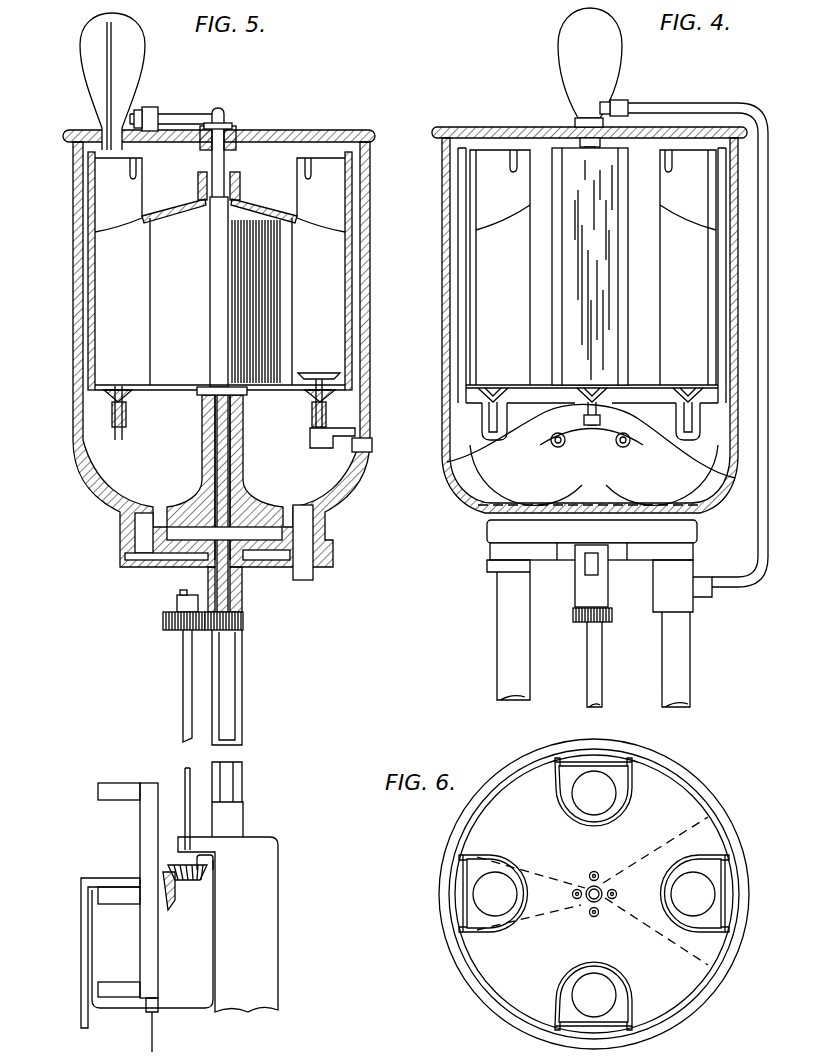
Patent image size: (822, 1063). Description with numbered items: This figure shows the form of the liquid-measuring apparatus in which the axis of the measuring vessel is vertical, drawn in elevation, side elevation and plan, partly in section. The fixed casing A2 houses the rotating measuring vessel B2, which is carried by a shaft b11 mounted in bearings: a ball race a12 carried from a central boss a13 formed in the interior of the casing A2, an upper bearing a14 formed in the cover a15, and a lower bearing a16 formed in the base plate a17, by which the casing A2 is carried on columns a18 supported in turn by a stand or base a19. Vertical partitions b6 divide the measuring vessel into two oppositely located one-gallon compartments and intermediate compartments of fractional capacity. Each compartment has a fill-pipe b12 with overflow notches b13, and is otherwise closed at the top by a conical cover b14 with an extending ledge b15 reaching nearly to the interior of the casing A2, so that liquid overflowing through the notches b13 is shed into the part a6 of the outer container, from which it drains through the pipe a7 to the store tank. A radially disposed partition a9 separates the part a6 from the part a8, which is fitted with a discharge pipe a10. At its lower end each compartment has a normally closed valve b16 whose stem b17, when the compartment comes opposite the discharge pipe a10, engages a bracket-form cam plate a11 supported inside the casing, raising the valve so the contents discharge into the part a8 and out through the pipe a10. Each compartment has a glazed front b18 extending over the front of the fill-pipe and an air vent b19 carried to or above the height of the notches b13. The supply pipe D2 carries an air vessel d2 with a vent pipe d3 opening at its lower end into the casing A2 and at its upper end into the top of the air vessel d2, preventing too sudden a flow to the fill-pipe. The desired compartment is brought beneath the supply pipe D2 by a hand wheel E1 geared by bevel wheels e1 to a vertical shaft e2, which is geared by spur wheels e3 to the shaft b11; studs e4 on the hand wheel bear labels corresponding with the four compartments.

In FIG. 4, the air vessel d2 is at (572, 38).
In FIG. 5, the air vessel d2 is at (83, 40).
In FIG. 5, the vent pipe d3 is at (108, 88).
In FIG. 4, the supply pipe D2 is at (667, 106).
In FIG. 5, the supply pipe D2 is at (164, 117).
In FIG. 4, the shaft b11 is at (590, 656).
In FIG. 5, the shaft b11 is at (216, 125).
In FIG. 6, the shaft b11 is at (588, 885).
In FIG. 4, the bearing a14 is at (588, 117).
In FIG. 5, the bearing a14 is at (226, 128).
In FIG. 4, the cover a15 is at (550, 127).
In FIG. 5, the cover a15 is at (306, 128).
In FIG. 4, the fixed casing A2 is at (447, 347).
In FIG. 5, the fixed casing A2 is at (78, 348).
In FIG. 6, the fixed casing A2 is at (520, 765).
In FIG. 4, the rotating measuring vessel B2 is at (490, 272).
In FIG. 5, the rotating measuring vessel B2 is at (268, 222).
In FIG. 6, the rotating measuring vessel B2 is at (672, 798).
In FIG. 4, the fill-pipe b12 is at (697, 205).
In FIG. 5, the fill-pipe b12 is at (108, 190).
In FIG. 6, the fill-pipe b12 is at (553, 797).
In FIG. 4, the overflow notches b13 is at (511, 163).
In FIG. 5, the overflow notches b13 is at (137, 170).
In FIG. 4, the conical cover b14 is at (530, 207).
In FIG. 5, the conical cover b14 is at (186, 216).
In FIG. 5, the extending ledge b15 is at (95, 229).
In FIG. 4, the glazed front b18 is at (610, 322).
In FIG. 5, the glazed front b18 is at (92, 248).
In FIG. 6, the glazed front b18 is at (598, 763).
In FIG. 5, the air vent b19 is at (200, 186).
In FIG. 6, the air vent b19 is at (597, 874).
In FIG. 5, the vertical partitions b6 is at (283, 273).
In FIG. 6, the vertical partitions b6 is at (537, 870).
In FIG. 5, the valve b16 is at (118, 383).
In FIG. 6, the valve b16 is at (606, 805).
In FIG. 4, the valve stem b17 is at (586, 424).
In FIG. 5, the valve stem b17 is at (121, 432).
In FIG. 4, the cam plate a11 is at (590, 432).
In FIG. 5, the cam plate a11 is at (325, 434).
In FIG. 5, the ball race a12 is at (244, 392).
In FIG. 4, the central boss a13 is at (612, 403).
In FIG. 5, the central boss a13 is at (206, 405).
In FIG. 5, the overflow part of container a6 is at (115, 487).
In FIG. 5, the drain pipe a7 is at (143, 552).
In FIG. 5, the discharge part of container a8 is at (314, 486).
In FIG. 4, the radially disposed partition a9 is at (465, 437).
In FIG. 4, the discharge pipe a10 is at (600, 562).
In FIG. 5, the discharge pipe a10 is at (302, 572).
In FIG. 4, the lower bearing a16 is at (582, 594).
In FIG. 4, the base plate a17 is at (505, 538).
In FIG. 5, the base plate a17 is at (330, 541).
In FIG. 4, the columns a18 is at (505, 634).
In FIG. 5, the columns a18 is at (243, 709).
In FIG. 5, the stand or base a19 is at (262, 947).
In FIG. 5, the bevel wheels e1 is at (203, 868).
In FIG. 5, the vertical shaft e2 is at (183, 740).
In FIG. 4, the spur wheels e3 is at (612, 620).
In FIG. 5, the spur wheels e3 is at (165, 623).
In FIG. 5, the studs e4 is at (108, 788).
In FIG. 5, the hand wheel E1 is at (141, 828).